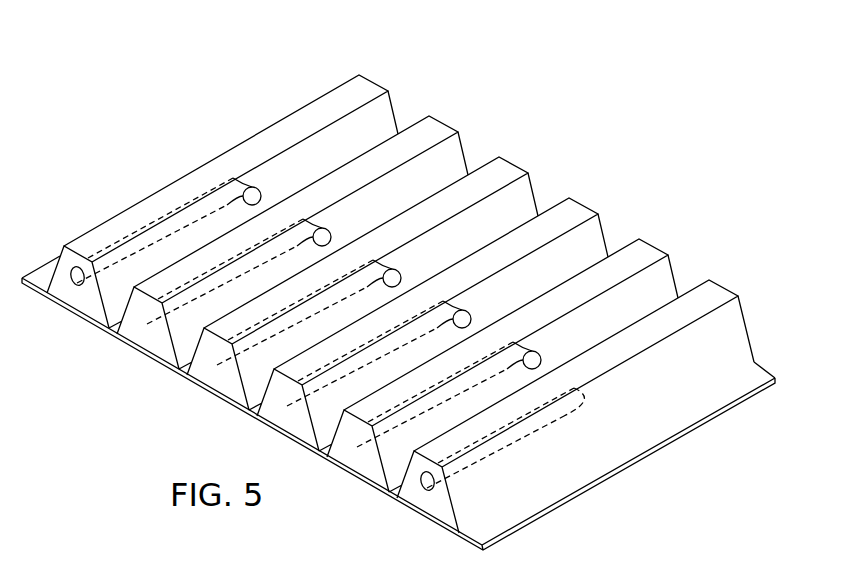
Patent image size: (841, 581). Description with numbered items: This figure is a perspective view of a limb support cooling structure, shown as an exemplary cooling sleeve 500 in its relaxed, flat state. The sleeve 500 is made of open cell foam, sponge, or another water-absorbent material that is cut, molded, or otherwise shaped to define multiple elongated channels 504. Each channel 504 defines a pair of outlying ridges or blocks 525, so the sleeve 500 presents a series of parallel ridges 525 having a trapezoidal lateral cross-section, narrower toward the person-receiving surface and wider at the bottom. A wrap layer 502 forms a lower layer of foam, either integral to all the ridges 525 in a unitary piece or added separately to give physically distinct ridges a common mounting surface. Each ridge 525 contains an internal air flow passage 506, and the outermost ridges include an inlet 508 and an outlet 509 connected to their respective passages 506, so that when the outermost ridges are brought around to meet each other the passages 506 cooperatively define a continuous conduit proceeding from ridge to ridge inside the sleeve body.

The cooling sleeve 500 is at (688, 212).
The wrap layer 502 is at (692, 428).
The elongated channel 504 is at (405, 118).
The internal air flow passage 506 is at (173, 210).
The inlet 508 is at (74, 283).
The outlet 509 is at (424, 488).
The ridge 525 is at (368, 80).